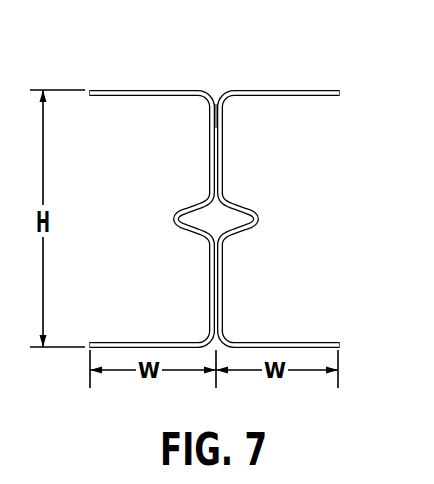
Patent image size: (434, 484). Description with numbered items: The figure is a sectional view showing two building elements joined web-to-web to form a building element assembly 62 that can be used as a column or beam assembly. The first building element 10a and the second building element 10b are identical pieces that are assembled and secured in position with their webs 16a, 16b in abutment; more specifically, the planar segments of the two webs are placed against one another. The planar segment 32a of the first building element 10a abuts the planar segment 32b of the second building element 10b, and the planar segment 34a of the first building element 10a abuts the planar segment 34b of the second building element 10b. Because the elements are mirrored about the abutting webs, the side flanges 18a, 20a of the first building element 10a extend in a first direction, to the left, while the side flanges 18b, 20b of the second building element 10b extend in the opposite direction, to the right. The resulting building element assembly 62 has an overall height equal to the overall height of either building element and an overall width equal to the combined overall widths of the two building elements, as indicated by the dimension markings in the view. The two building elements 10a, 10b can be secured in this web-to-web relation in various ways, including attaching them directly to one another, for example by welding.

The first building element 10a is at (142, 183).
The second building element 10b is at (295, 189).
The side flange of first building element 18a is at (160, 88).
The side flange of second building element 18b is at (305, 90).
The side flange of first building element 20a is at (120, 340).
The side flange of second building element 20b is at (323, 340).
The planar segment of web of first building element 32a is at (209, 129).
The planar segment of web of second building element 32b is at (223, 130).
The web of first building element 16a is at (197, 175).
The web of second building element 16b is at (238, 269).
The planar segment of web of first building element 34a is at (209, 283).
The planar segment of web of second building element 34b is at (223, 305).
The building element assembly 62 is at (236, 81).